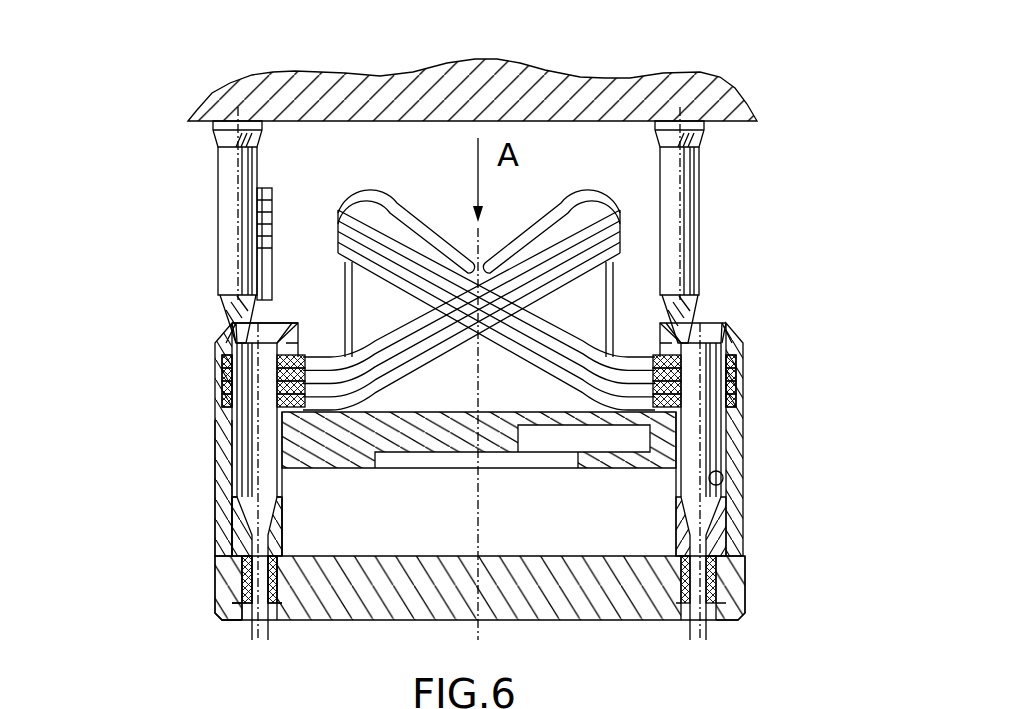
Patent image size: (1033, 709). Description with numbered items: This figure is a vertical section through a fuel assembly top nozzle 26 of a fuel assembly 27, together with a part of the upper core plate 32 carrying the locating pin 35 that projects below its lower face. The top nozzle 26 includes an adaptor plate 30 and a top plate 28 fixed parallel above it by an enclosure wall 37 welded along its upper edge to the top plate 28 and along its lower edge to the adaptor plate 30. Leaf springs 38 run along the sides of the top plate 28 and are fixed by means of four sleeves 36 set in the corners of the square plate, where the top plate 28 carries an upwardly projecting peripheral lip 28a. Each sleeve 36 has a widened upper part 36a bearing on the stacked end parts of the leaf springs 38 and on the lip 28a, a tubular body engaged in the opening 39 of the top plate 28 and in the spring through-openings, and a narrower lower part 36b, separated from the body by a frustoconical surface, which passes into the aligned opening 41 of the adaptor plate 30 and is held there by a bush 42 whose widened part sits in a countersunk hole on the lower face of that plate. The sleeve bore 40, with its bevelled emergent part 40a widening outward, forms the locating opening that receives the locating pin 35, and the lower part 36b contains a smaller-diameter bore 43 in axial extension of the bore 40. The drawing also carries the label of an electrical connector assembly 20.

The electrical connector assembly 20 is at (663, 521).
The top nozzle 26 is at (200, 570).
The fuel assembly 27 is at (687, 233).
The top plate 28 is at (442, 432).
The peripheral lip 28a is at (219, 372).
The adaptor plate 30 is at (543, 600).
The upper core plate 32 is at (340, 90).
The locating pin 35 is at (247, 178).
The sleeve 36 is at (218, 328).
The upper part 36a is at (302, 333).
The lower part 36b is at (347, 620).
The enclosure wall 37 is at (222, 508).
The leaf spring 38 is at (535, 262).
The opening 39 is at (230, 434).
The sleeve bore 40 is at (230, 396).
The bevelled emergent part 40a is at (280, 262).
The opening 41 is at (217, 600).
The bush 42 is at (277, 620).
The bore 43 is at (256, 620).